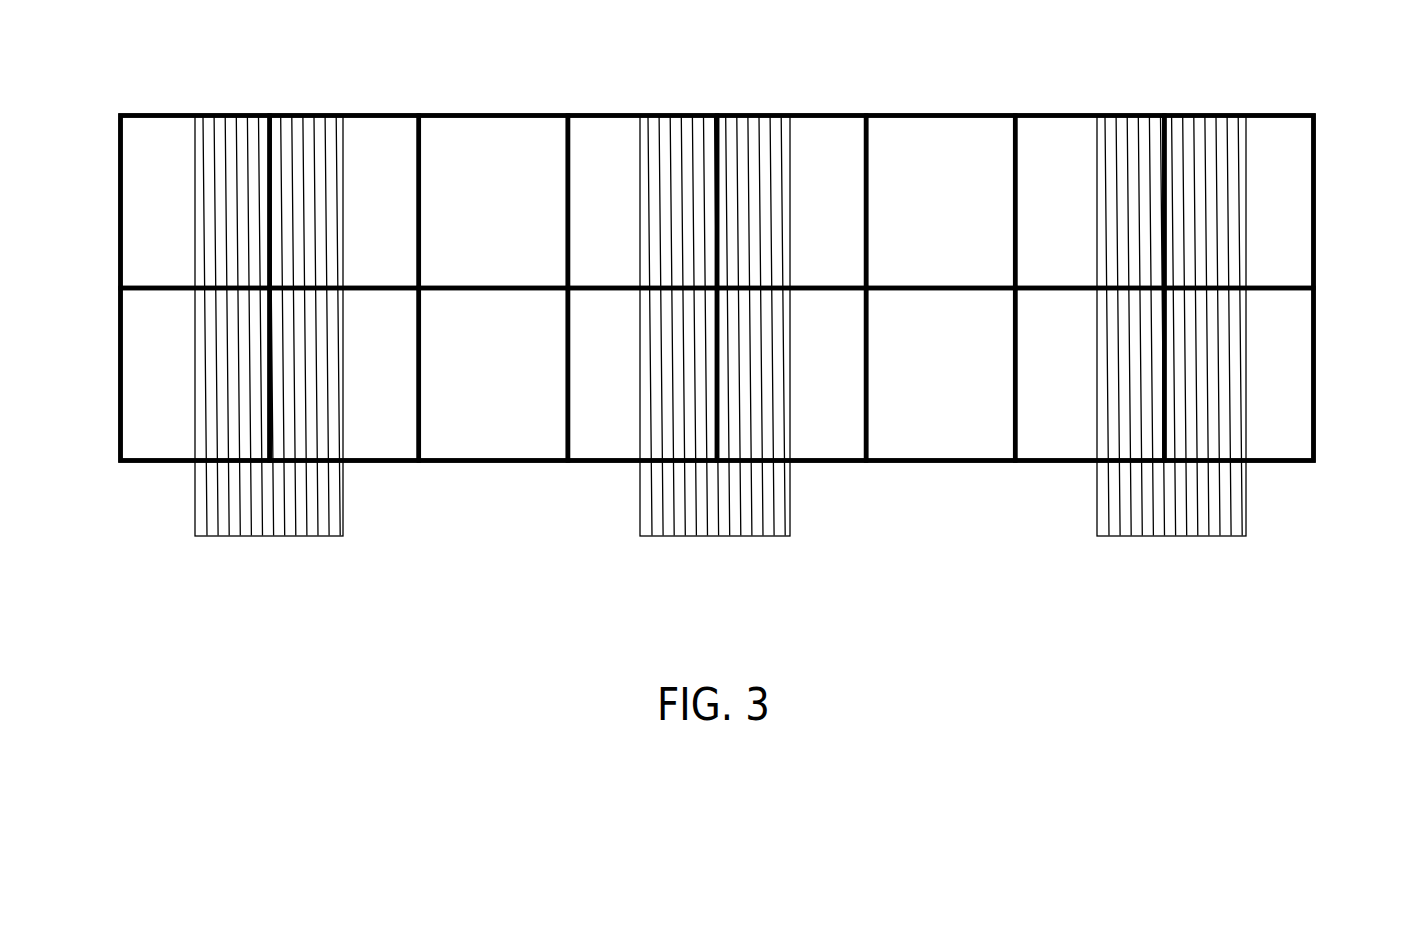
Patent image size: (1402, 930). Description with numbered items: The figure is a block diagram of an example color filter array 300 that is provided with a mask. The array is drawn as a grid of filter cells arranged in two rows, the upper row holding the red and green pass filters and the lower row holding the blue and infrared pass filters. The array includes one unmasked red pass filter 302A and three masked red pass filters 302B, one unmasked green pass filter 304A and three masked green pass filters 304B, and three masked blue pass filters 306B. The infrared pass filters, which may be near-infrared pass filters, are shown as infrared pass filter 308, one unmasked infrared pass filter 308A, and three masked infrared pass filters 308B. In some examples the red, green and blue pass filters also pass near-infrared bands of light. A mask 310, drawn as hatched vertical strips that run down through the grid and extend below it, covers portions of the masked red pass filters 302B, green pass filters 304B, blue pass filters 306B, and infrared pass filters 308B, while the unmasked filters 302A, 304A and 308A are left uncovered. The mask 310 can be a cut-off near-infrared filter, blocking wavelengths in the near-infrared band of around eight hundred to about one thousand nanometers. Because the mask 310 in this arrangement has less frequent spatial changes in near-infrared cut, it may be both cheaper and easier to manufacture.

The color filter array 300 is at (732, 668).
The unmasked red pass filter 302A is at (987, 116).
The masked red pass filter 302B is at (338, 116).
The unmasked green pass filter 304A is at (515, 116).
The masked green pass filter 304B is at (160, 116).
The masked blue pass filter 306B is at (165, 460).
The infrared pass filter 308 is at (620, 460).
The unmasked infrared pass filter 308A is at (967, 460).
The masked infrared pass filter 308B is at (367, 460).
The mask 310 is at (243, 536).